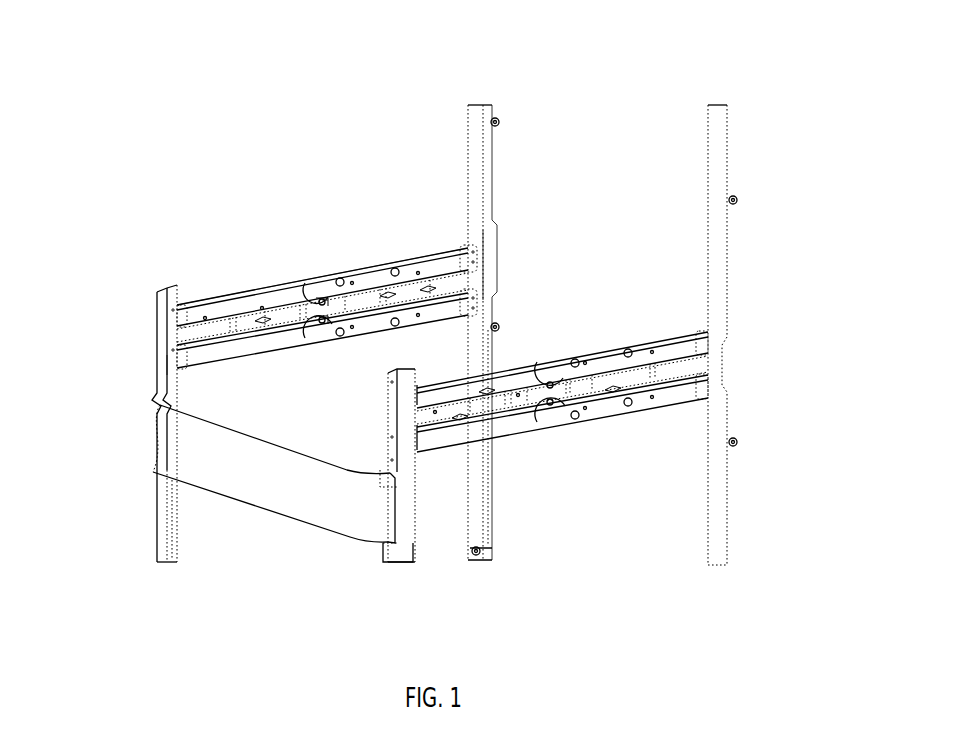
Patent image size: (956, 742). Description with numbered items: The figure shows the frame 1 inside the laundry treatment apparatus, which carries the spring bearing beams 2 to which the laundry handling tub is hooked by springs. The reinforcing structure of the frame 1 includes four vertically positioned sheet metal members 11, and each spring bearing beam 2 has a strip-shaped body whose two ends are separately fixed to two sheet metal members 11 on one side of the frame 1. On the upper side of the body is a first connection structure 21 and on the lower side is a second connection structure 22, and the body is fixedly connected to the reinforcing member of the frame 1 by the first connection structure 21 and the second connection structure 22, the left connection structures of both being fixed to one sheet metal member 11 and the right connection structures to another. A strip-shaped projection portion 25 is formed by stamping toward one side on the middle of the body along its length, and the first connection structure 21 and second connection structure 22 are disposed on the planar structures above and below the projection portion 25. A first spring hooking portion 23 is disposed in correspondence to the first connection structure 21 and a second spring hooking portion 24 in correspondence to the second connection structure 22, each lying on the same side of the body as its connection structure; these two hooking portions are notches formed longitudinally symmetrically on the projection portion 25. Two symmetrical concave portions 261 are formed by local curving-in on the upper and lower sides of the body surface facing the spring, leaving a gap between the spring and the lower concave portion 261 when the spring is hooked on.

The frame 1 is at (350, 588).
The spring bearing beam 2 is at (580, 455).
The sheet metal member 11 is at (727, 145).
The first connection structure 21 is at (468, 250).
The second connection structure 22 is at (490, 287).
The first spring hooking portion 23 is at (325, 302).
The second spring hooking portion 24 is at (290, 306).
The projection portion 25 is at (205, 368).
The concave portion 261 is at (322, 290).